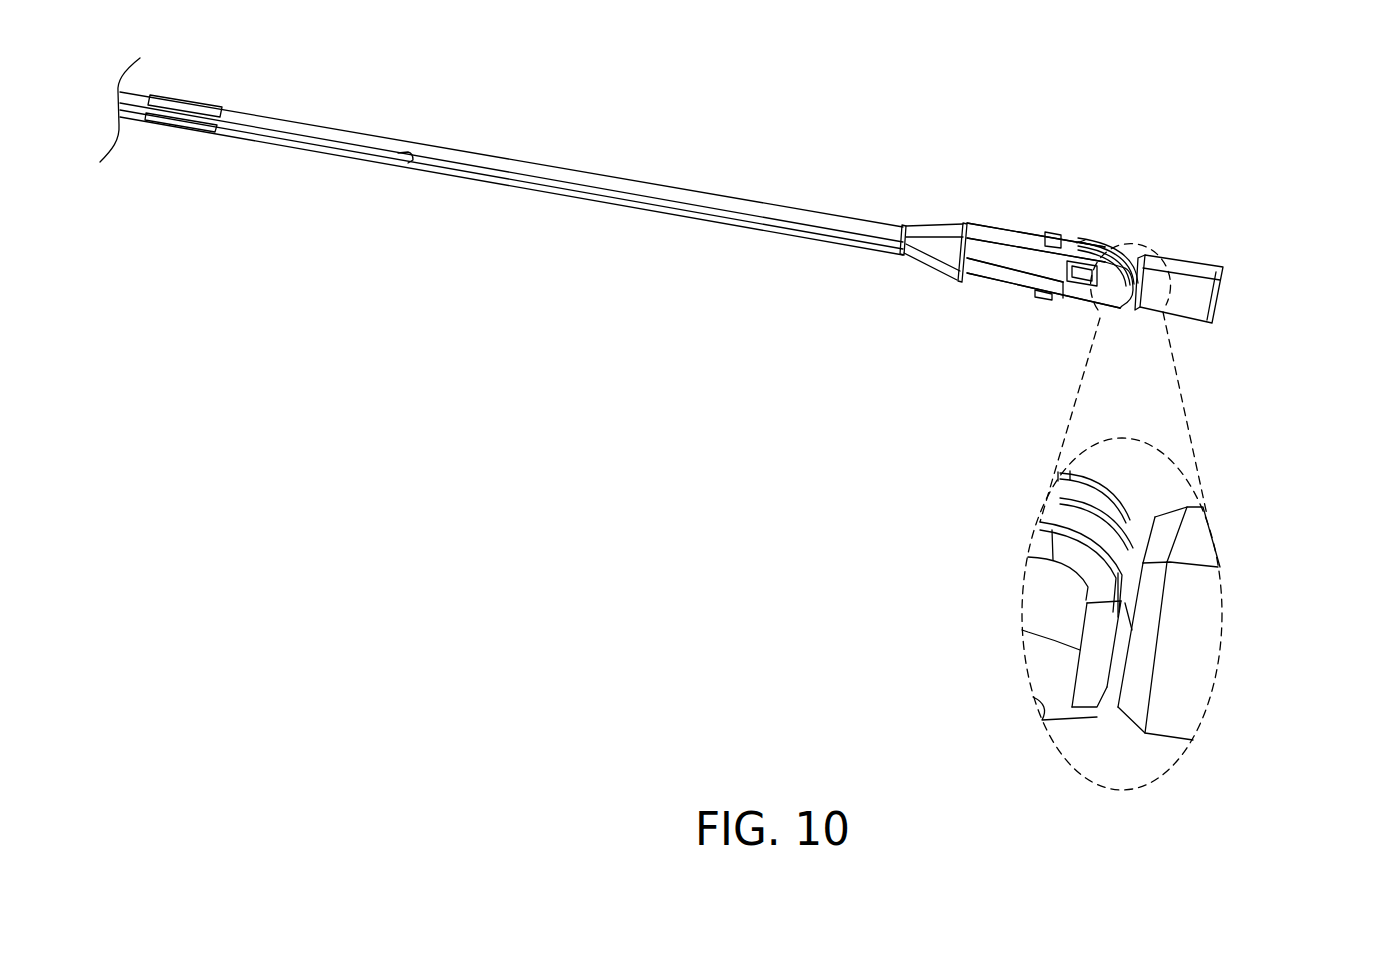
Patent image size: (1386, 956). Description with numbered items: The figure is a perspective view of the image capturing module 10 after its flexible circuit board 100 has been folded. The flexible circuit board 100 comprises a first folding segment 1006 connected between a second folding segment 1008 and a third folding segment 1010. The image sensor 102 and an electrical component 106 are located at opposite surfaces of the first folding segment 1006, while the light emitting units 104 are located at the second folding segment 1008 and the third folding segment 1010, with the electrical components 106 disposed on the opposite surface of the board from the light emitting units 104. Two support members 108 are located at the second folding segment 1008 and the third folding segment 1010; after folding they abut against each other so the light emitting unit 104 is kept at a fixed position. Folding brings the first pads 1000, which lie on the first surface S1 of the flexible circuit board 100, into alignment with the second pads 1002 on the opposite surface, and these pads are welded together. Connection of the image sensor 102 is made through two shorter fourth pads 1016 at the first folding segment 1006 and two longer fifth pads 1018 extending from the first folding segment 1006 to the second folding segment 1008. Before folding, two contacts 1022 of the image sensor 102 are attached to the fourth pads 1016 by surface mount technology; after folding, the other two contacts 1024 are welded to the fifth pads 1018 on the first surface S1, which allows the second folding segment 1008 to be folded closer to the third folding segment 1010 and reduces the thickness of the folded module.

The image capturing module 10 is at (583, 103).
The flexible circuit board 100 is at (540, 191).
The first pads 1000 is at (222, 80).
The second pads 1002 is at (178, 130).
The image sensor 102 is at (1198, 257).
The light emitting unit 104 is at (1052, 233).
The electrical component 106 is at (1100, 245).
The support member 108 is at (992, 252).
The second folding segment 1008 is at (1022, 240).
The third folding segment 1010 is at (992, 272).
The first folding segment 1006 is at (1130, 300).
The first surface S1 is at (1077, 243).
The fourth pads 1016 is at (1100, 666).
The fifth pads 1018 is at (1102, 532).
The contacts 1022 is at (1132, 690).
The contacts 1024 is at (1133, 590).